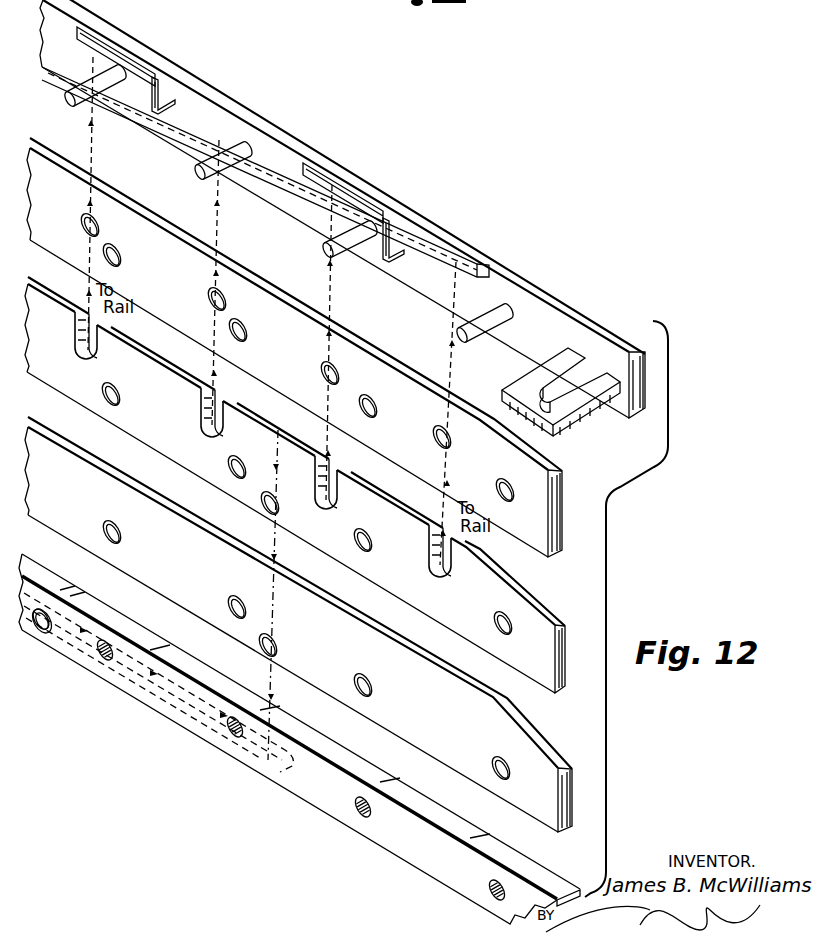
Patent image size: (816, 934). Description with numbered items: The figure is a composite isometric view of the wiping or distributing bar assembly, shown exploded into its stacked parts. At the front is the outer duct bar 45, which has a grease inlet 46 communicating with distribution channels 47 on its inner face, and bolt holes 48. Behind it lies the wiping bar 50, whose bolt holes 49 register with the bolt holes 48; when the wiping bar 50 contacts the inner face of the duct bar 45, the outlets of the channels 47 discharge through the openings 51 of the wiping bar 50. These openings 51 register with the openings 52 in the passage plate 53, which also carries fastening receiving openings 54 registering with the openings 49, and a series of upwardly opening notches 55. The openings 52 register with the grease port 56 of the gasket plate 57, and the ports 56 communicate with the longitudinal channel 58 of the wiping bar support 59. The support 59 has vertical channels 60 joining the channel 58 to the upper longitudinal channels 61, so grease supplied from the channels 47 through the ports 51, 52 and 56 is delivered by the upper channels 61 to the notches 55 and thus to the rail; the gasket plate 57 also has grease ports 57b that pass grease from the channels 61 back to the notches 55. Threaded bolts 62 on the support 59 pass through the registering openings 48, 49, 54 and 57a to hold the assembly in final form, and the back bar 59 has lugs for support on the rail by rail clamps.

The outer duct bar 45 is at (300, 799).
The grease inlet 46 is at (42, 636).
The distribution channels 47 is at (195, 718).
The bolt holes 48 is at (102, 663).
The bolt holes 49 is at (104, 543).
The wiping bar 50 is at (430, 660).
The openings 51 is at (263, 651).
The openings 52 is at (264, 513).
The passage plate 53 is at (325, 538).
The fastening receiving openings 54 is at (108, 406).
The upwardly opening notches 55 is at (220, 392).
The grease port 56 is at (272, 382).
The gasket plate 57 is at (343, 265).
The registering openings 57a is at (122, 252).
The grease ports 57b is at (97, 218).
The longitudinal channel 58 is at (262, 185).
The wiping bar support 59 is at (490, 268).
The vertical channels 60 is at (162, 90).
The upper longitudinal channels 61 is at (118, 56).
The threaded bolts 62 is at (462, 333).